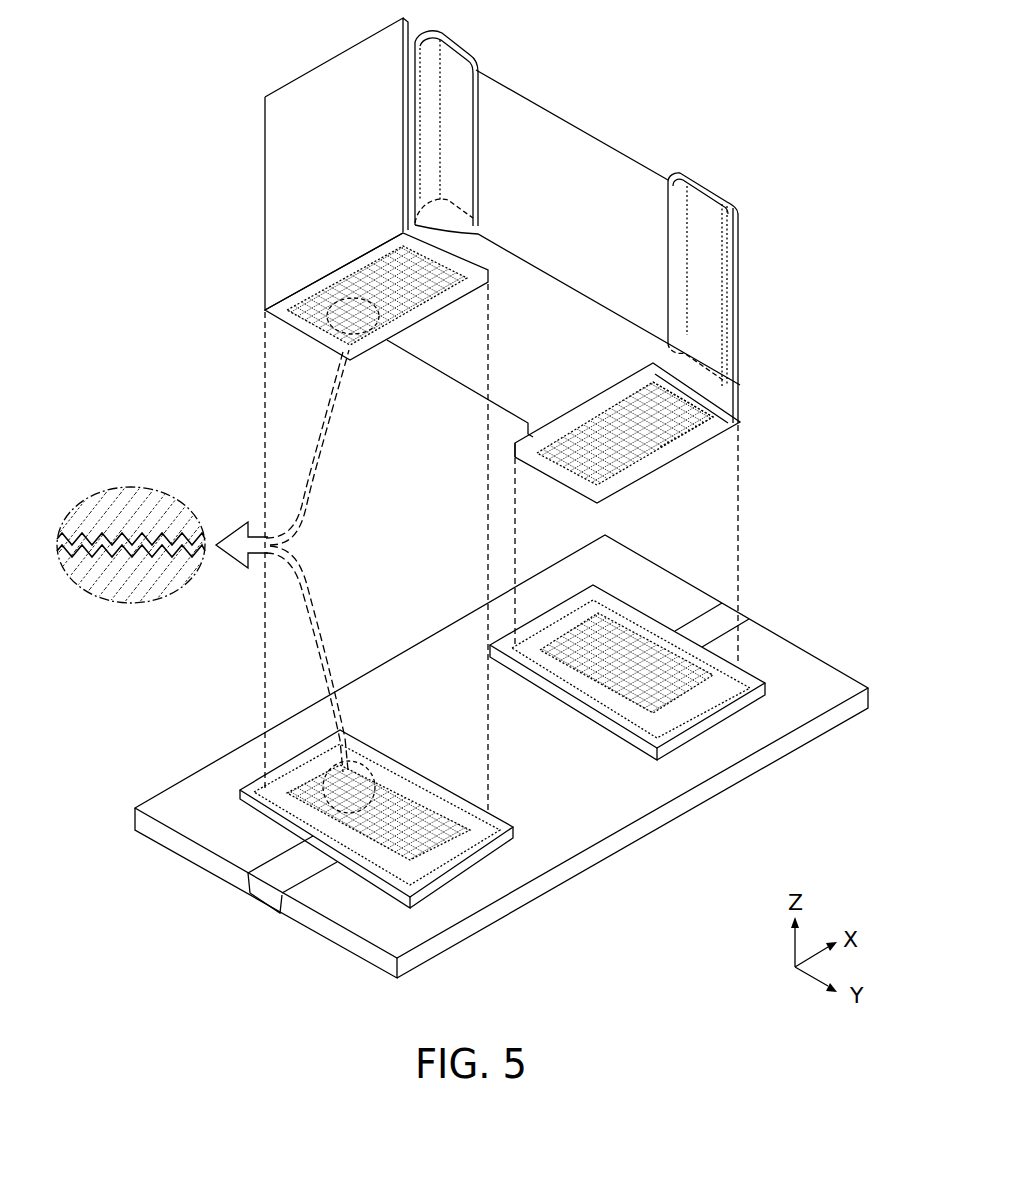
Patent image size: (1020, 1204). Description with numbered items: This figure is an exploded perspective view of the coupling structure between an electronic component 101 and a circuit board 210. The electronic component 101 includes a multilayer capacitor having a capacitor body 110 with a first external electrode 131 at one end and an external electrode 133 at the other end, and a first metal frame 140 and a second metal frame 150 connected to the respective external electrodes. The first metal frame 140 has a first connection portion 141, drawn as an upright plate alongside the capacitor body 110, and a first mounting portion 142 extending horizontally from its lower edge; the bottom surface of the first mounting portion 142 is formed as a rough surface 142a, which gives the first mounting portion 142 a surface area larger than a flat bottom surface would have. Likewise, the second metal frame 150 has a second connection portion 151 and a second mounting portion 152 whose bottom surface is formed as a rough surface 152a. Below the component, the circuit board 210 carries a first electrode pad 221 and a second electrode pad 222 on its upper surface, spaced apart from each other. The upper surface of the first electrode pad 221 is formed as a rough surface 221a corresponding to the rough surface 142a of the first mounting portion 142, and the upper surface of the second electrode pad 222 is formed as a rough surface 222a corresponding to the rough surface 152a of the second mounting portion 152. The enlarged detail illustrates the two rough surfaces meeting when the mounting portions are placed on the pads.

The electronic component 101 is at (646, 132).
The capacitor body 110 is at (562, 145).
The first external electrode 131 is at (473, 62).
The second bent tab portion 133 is at (713, 204).
The first metal frame 140 is at (187, 223).
The first connection portion 141 is at (290, 203).
The first mounting portion 142 is at (292, 292).
The rough surface 142a is at (387, 343).
The second metal frame 150 is at (832, 352).
The second connection portion 151 is at (742, 345).
The second mounting portion 152 is at (733, 398).
The rough surface 152a is at (672, 450).
The circuit board 210 is at (608, 823).
The first electrode pad 221 is at (510, 853).
The rough surface 221a is at (482, 912).
The second electrode pad 222 is at (682, 742).
The rough surface 222a is at (710, 687).